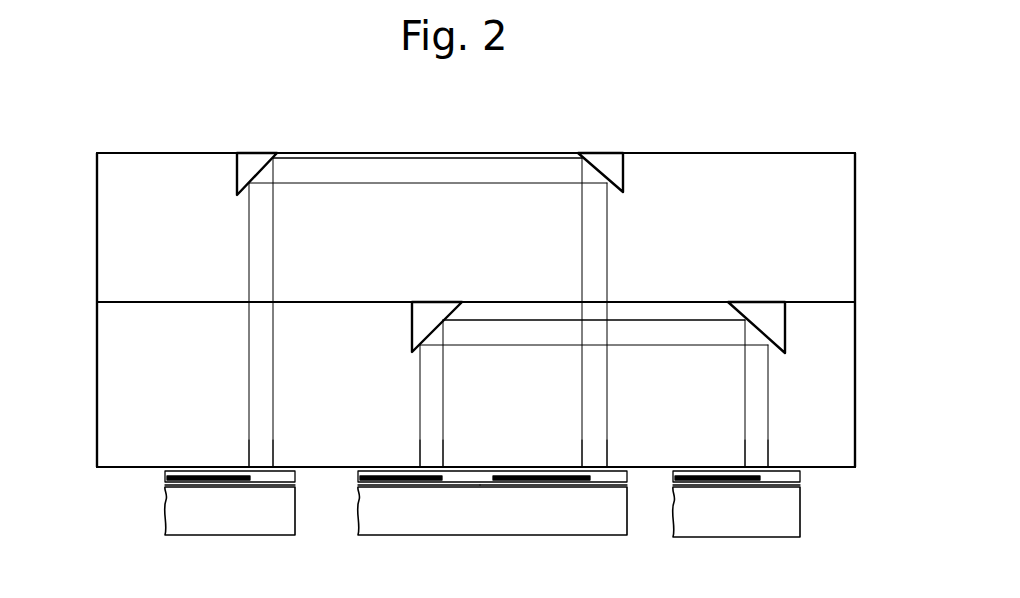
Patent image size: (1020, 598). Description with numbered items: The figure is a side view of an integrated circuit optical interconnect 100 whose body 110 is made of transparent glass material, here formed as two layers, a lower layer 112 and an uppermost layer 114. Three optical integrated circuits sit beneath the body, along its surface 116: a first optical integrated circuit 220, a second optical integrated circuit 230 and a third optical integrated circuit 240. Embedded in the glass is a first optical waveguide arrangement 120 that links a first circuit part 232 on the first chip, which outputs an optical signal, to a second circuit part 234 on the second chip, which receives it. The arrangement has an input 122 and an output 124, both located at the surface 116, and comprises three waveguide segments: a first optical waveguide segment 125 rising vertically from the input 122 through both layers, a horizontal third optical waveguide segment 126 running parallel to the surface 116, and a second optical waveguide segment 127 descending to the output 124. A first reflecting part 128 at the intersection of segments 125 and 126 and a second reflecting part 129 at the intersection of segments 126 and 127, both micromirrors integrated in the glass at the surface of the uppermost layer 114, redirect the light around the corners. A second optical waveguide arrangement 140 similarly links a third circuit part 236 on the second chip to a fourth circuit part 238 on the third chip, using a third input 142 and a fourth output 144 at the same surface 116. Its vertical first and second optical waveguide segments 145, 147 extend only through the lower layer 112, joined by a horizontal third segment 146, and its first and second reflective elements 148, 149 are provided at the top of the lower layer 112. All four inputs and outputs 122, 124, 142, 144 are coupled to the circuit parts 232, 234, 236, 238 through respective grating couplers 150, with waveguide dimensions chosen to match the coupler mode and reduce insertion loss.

The integrated circuit optical interconnect 100 is at (102, 125).
The body 110 is at (97, 326).
The lower layer of glass material 112 is at (857, 382).
The uppermost layer of glass material 114 is at (857, 235).
The surface of the body 116 is at (97, 470).
The first optical waveguide arrangement 120 is at (514, 152).
The input 122 is at (259, 465).
The output 124 is at (587, 460).
The first optical waveguide segment 125 is at (255, 258).
The third optical waveguide segment 126 is at (373, 168).
The second optical waveguide segment 127 is at (600, 234).
The first reflecting part 128 is at (246, 154).
The second reflecting part 129 is at (610, 158).
The second optical waveguide arrangement 140 is at (711, 308).
The third input 142 is at (430, 463).
The fourth output 144 is at (753, 463).
The first optical waveguide segment of the second arrangement 145 is at (428, 380).
The third optical waveguide segment of the second arrangement 146 is at (647, 340).
The second optical waveguide segment of the second arrangement 147 is at (760, 390).
The first reflective element 148 is at (427, 323).
The second reflective element 149 is at (785, 314).
The grating coupler 150 is at (640, 478).
The first optical integrated circuit 220 is at (218, 537).
The second optical integrated circuit 230 is at (523, 537).
The third optical integrated circuit 240 is at (748, 538).
The first circuit part 232 is at (247, 487).
The second circuit part 234 is at (582, 487).
The third circuit part 236 is at (417, 487).
The fourth circuit part 238 is at (752, 488).